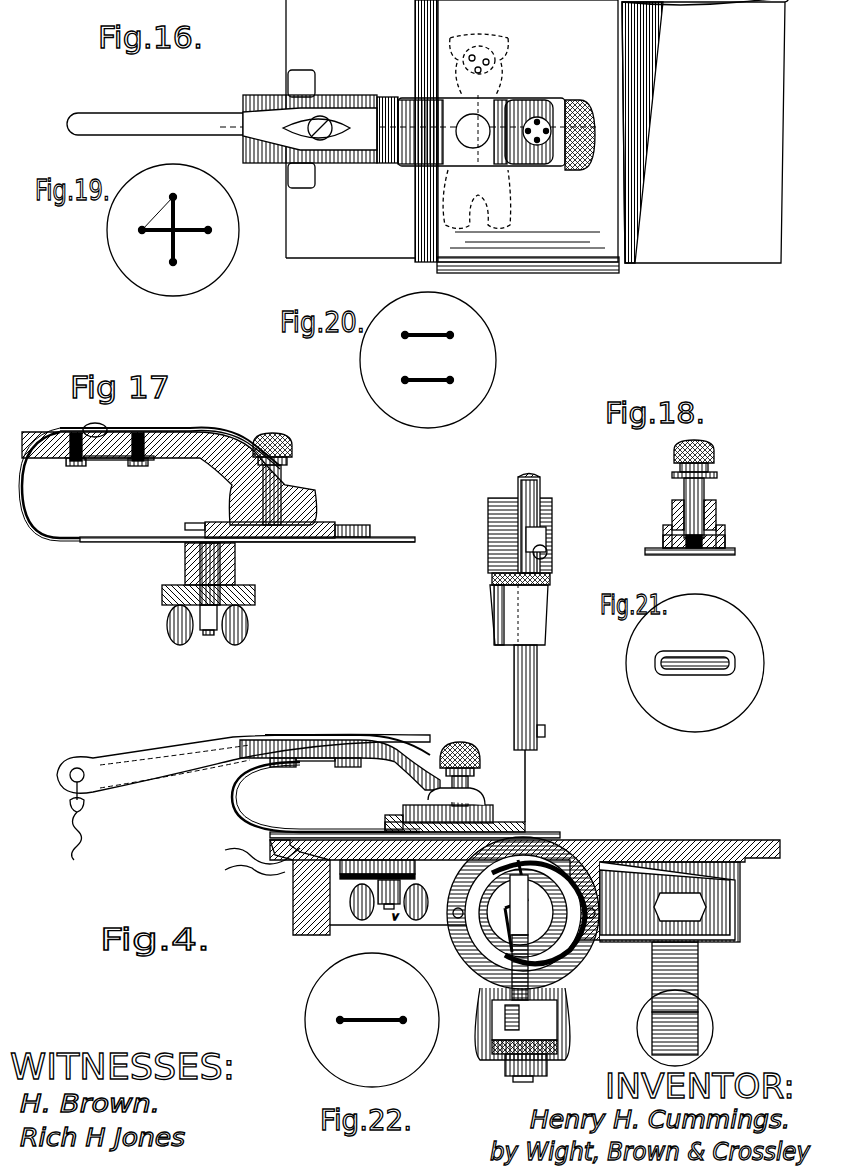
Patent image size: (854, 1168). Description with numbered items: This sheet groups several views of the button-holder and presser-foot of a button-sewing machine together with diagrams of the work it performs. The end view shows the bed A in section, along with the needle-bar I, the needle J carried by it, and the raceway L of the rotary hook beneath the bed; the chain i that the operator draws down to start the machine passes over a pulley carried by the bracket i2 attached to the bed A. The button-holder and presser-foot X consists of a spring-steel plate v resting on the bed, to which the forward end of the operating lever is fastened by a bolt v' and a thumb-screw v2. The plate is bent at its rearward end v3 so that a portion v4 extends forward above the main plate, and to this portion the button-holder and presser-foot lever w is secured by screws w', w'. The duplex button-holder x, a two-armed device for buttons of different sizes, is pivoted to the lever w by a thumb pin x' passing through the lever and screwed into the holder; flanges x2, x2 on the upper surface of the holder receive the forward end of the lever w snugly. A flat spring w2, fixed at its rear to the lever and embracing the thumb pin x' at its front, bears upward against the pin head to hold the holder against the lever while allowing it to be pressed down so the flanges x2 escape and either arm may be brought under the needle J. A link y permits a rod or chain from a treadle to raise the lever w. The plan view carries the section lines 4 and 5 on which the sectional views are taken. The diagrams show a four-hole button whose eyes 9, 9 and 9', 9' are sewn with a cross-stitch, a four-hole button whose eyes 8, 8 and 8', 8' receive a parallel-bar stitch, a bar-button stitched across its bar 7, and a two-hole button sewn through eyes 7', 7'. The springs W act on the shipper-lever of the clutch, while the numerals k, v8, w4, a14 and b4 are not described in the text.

In FIG. 16, the section line 4 4 is at (240, 126).
In FIG. 16, the section line 5 5 is at (476, 130).
In FIG. 21, the bar of the bar-button 7 is at (704, 669).
In FIG. 22, the bar of the bar-button 7 is at (364, 1032).
In FIG. 22, the eyes of two-hole button 7' is at (413, 1020).
In FIG. 20, the eyes of four-hole button 8 is at (432, 335).
In FIG. 20, the eyes of four-hole button 8' is at (437, 389).
In FIG. 19, the eyes of four-hole button 9 is at (174, 231).
In FIG. 19, the eyes of four-hole button 9' is at (162, 227).
In FIG. 4, the bed A is at (690, 842).
In FIG. 4, the needle-bar I is at (540, 672).
In FIG. 4, the needle J is at (530, 788).
In FIG. 4, the raceway of the rotary hook L is at (465, 945).
In FIG. 4, the inner disk k is at (532, 930).
In FIG. 4, the chain i is at (675, 1028).
In FIG. 4, the bracket i2 is at (700, 972).
In FIG. 4, the link y is at (86, 822).
In FIG. 16, the spring-steel plate v is at (387, 117).
In FIG. 17, the spring-steel plate v is at (247, 531).
In FIG. 18, the spring-steel plate v is at (697, 545).
In FIG. 4, the spring-steel plate v is at (415, 822).
In FIG. 17, the bolt v' is at (228, 564).
In FIG. 17, the thumb-screw v2 is at (250, 620).
In FIG. 4, the thumb-screw v2 is at (383, 900).
In FIG. 4, the bent rearward end of plate v3 is at (238, 797).
In FIG. 16, the forward-extending portion of plate v4 is at (330, 106).
In FIG. 17, the forward-extending portion of plate v4 is at (110, 460).
In FIG. 17, the loop spring v8 is at (22, 500).
In FIG. 16, the button-holder and presser-foot lever w is at (310, 129).
In FIG. 17, the button-holder and presser-foot lever w is at (169, 478).
In FIG. 4, the button-holder and presser-foot lever w is at (340, 765).
In FIG. 17, the screws w' is at (112, 456).
In FIG. 4, the screws w' is at (315, 771).
In FIG. 16, the flat spring w2 is at (320, 129).
In FIG. 17, the flat spring w2 is at (200, 430).
In FIG. 18, the flat spring w2 is at (716, 476).
In FIG. 4, the flat spring w2 is at (420, 737).
In FIG. 4, the sleeve w4 is at (377, 877).
In FIG. 18, the springs W is at (674, 500).
In FIG. 16, the duplex button-holder x is at (481, 119).
In FIG. 17, the duplex button-holder x is at (277, 520).
In FIG. 18, the duplex button-holder x is at (681, 538).
In FIG. 4, the duplex button-holder x is at (458, 810).
In FIG. 16, the thumb pin x' is at (473, 131).
In FIG. 17, the thumb pin x' is at (280, 479).
In FIG. 18, the thumb pin x' is at (707, 508).
In FIG. 4, the thumb pin x' is at (463, 774).
In FIG. 18, the flanges x2 is at (666, 526).
In FIG. 4, the flanges x2 is at (412, 815).
In FIG. 16, the button-holder and presser-foot X is at (550, 113).
In FIG. 17, the button-holder and presser-foot X is at (287, 553).
In FIG. 17, the plate a14 is at (258, 594).
In FIG. 4, the plate b4 is at (314, 762).